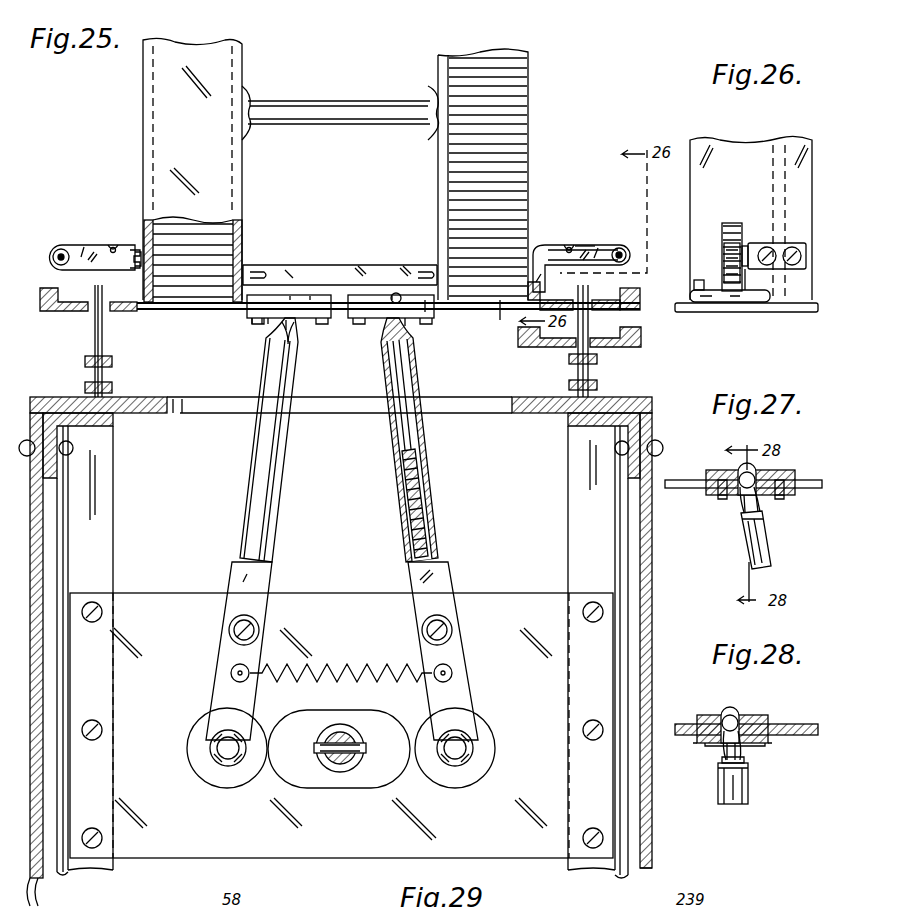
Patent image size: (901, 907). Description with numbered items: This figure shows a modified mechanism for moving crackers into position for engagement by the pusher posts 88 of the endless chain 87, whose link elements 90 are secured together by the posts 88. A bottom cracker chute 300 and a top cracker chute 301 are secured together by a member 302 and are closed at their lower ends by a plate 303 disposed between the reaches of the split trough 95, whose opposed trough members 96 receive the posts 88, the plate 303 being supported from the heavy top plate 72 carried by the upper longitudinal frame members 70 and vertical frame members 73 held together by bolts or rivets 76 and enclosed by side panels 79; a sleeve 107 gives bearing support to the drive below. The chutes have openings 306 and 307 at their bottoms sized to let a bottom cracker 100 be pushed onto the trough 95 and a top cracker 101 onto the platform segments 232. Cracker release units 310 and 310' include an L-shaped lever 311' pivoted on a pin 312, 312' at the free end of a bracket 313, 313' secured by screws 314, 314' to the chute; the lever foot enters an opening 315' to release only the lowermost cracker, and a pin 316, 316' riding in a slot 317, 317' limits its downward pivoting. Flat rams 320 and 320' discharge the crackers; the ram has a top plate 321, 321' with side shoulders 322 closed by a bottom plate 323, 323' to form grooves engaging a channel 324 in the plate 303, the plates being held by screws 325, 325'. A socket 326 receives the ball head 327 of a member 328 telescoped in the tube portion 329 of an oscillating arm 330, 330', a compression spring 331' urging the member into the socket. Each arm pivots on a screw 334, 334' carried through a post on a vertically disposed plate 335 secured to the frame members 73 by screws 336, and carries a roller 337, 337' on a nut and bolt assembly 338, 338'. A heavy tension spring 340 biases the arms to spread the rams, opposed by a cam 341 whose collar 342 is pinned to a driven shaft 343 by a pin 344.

In FIG. 25, the bottom cracker chute 300 is at (172, 162).
In FIG. 25, the top cracker chute 301 is at (532, 78).
In FIG. 26, the top cracker chute 301 is at (745, 142).
In FIG. 25, the member 302 is at (358, 104).
In FIG. 25, the bottom cracker 100 is at (198, 234).
In FIG. 25, the top cracker 101 is at (497, 120).
In FIG. 26, the top cracker 101 is at (730, 224).
In FIG. 25, the plate 303 is at (262, 314).
In FIG. 26, the plate 303 is at (808, 312).
In FIG. 27, the plate 303 is at (690, 490).
In FIG. 28, the plate 303 is at (780, 728).
In FIG. 25, the opening 306 is at (256, 300).
In FIG. 25, the opening 307 is at (505, 318).
In FIG. 25, the cracker release unit 310 is at (83, 234).
In FIG. 25, the cracker release unit 310' is at (589, 235).
In FIG. 26, the cracker release unit 310' is at (730, 314).
In FIG. 25, the L-shaped lever 311' is at (630, 230).
In FIG. 26, the L-shaped lever 311' is at (774, 232).
In FIG. 25, the pin 312 is at (47, 246).
In FIG. 25, the pin 312' is at (648, 246).
In FIG. 26, the pin 312' is at (708, 272).
In FIG. 25, the bracket 313 is at (74, 235).
In FIG. 25, the bracket 313' is at (639, 224).
In FIG. 26, the bracket 313' is at (787, 227).
In FIG. 25, the screws 314 is at (124, 280).
In FIG. 26, the screws 314' is at (782, 292).
In FIG. 25, the opening 315' is at (557, 234).
In FIG. 26, the opening 315' is at (738, 225).
In FIG. 25, the pin 316 is at (101, 271).
In FIG. 25, the pin 316' is at (606, 294).
In FIG. 25, the slot 317 is at (118, 225).
In FIG. 25, the slot 317' is at (581, 226).
In FIG. 25, the flat ram 320 is at (340, 280).
In FIG. 27, the flat ram 320 is at (727, 472).
In FIG. 28, the flat ram 320 is at (758, 702).
In FIG. 25, the flat ram 320' is at (357, 331).
In FIG. 25, the top plate 321 is at (339, 257).
In FIG. 27, the top plate 321 is at (780, 459).
In FIG. 28, the top plate 321 is at (749, 699).
In FIG. 25, the top plate 321' is at (399, 272).
In FIG. 25, the side shoulders 322 is at (288, 332).
In FIG. 28, the side shoulders 322 is at (702, 718).
In FIG. 25, the bottom plate 323 is at (230, 332).
In FIG. 28, the bottom plate 323 is at (714, 758).
In FIG. 25, the bottom plate 323' is at (451, 274).
In FIG. 28, the channel 324 is at (738, 716).
In FIG. 25, the screws 325 is at (278, 352).
In FIG. 27, the screws 325 is at (744, 512).
In FIG. 25, the screws 325' is at (438, 344).
In FIG. 27, the socket 326 is at (742, 498).
In FIG. 28, the socket 326 is at (726, 754).
In FIG. 25, the ball head 327 is at (282, 342).
In FIG. 27, the ball head 327 is at (738, 472).
In FIG. 28, the ball head 327 is at (742, 752).
In FIG. 25, the member 328 is at (290, 348).
In FIG. 27, the member 328 is at (748, 532).
In FIG. 28, the member 328 is at (748, 762).
In FIG. 25, the tube portion 329 is at (266, 461).
In FIG. 27, the tube portion 329 is at (770, 542).
In FIG. 28, the tube portion 329 is at (733, 806).
In FIG. 25, the oscillating arm 330 is at (229, 641).
In FIG. 25, the oscillating arm 330' is at (458, 636).
In FIG. 25, the compression spring 331' is at (394, 440).
In FIG. 25, the screw 334 is at (217, 630).
In FIG. 25, the screw 334' is at (464, 606).
In FIG. 25, the vertically disposed plate 335 is at (164, 600).
In FIG. 25, the screws 336 is at (90, 602).
In FIG. 25, the roller 337 is at (201, 748).
In FIG. 25, the roller 337' is at (477, 734).
In FIG. 25, the nut and bolt assembly 338 is at (223, 777).
In FIG. 25, the nut and bolt assembly 338' is at (490, 760).
In FIG. 25, the tension spring 340 is at (360, 668).
In FIG. 25, the cam 341 is at (388, 775).
In FIG. 25, the collar 342 is at (334, 762).
In FIG. 25, the driven shaft 343 is at (352, 762).
In FIG. 25, the pin 344 is at (364, 742).
In FIG. 25, the upper longitudinal frame members 70 is at (98, 426).
In FIG. 25, the top plate 72 is at (150, 413).
In FIG. 25, the vertical frame members 73 is at (96, 528).
In FIG. 25, the bolts or rivets 76 is at (60, 466).
In FIG. 25, the side panels 79 is at (654, 868).
In FIG. 25, the endless chain 87 is at (110, 386).
In FIG. 25, the posts 88 is at (94, 348).
In FIG. 25, the link elements 90 is at (87, 366).
In FIG. 25, the split trough 95 is at (79, 327).
In FIG. 25, the trough members 96 is at (50, 286).
In FIG. 26, the sleeve 107 is at (762, 292).
In FIG. 25, the platform segments 232 is at (638, 292).